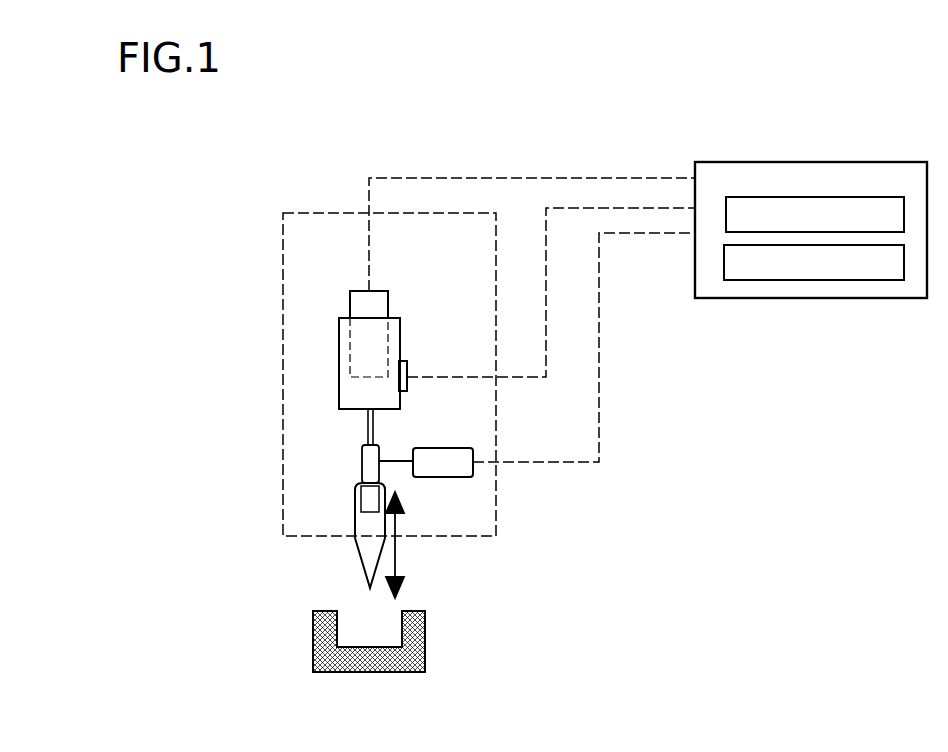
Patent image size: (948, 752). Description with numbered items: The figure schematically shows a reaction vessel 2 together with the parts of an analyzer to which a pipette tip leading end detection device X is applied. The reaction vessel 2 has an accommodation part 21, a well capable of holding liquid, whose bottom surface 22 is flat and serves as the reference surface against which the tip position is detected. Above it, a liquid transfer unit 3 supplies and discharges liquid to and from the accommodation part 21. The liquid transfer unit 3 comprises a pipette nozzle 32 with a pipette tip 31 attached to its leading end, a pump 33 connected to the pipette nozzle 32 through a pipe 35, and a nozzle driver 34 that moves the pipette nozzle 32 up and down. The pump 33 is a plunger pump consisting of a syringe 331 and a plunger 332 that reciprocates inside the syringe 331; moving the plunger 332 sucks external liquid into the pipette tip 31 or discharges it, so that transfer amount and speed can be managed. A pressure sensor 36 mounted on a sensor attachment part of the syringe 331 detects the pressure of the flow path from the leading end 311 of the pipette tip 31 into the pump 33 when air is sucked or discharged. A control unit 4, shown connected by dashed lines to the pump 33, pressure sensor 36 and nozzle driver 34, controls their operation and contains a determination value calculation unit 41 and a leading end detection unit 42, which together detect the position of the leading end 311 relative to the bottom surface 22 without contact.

The reaction vessel 2 is at (300, 660).
The accommodation part 21 is at (397, 630).
The bottom surface 22 is at (365, 647).
The liquid transfer unit 3 is at (283, 373).
The pipette tip 31 is at (355, 505).
The leading end 311 is at (368, 586).
The pipette nozzle 32 is at (362, 462).
The pump 33 is at (331, 306).
The syringe 331 is at (340, 337).
The plunger 332 is at (389, 305).
The nozzle driver 34 is at (443, 478).
The pipe 35 is at (374, 432).
The pressure sensor 36 is at (408, 363).
The control unit 4 is at (763, 162).
The determination value calculation unit 41 is at (880, 197).
The leading end detection unit 42 is at (872, 280).
The pipette tip leading end detection device X is at (590, 522).